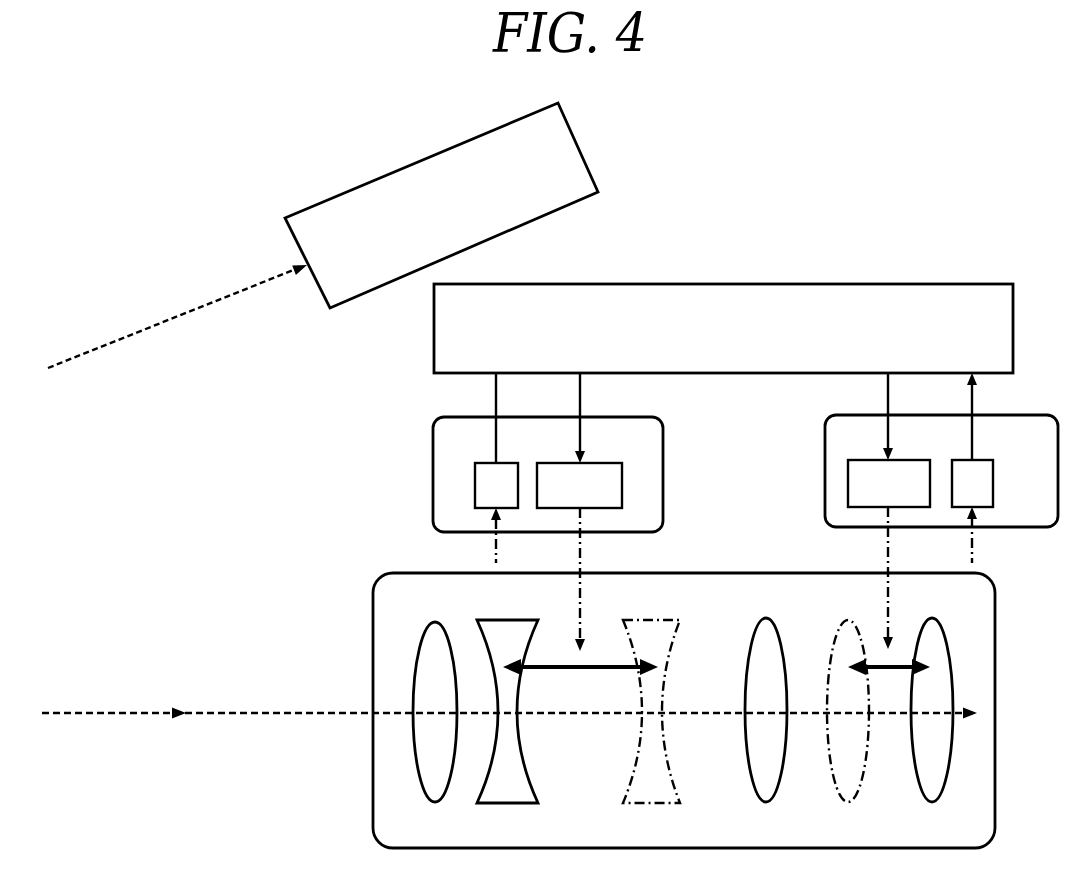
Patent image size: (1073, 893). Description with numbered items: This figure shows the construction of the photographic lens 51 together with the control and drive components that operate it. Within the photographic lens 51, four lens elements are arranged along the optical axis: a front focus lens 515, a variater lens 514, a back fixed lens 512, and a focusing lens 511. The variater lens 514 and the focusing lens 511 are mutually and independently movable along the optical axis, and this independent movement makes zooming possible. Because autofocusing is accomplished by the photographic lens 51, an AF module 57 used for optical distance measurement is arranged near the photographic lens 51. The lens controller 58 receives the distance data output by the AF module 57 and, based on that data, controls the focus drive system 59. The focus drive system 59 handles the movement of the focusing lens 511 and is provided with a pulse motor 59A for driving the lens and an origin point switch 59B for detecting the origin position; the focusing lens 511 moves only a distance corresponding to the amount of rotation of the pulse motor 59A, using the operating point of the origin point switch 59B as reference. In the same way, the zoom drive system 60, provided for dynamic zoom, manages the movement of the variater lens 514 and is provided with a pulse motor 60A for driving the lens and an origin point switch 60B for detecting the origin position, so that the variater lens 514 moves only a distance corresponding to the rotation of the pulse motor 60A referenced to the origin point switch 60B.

The photographic lens 51 is at (684, 729).
The focusing lens 511 is at (937, 802).
The back fixed lens 512 is at (770, 802).
The variater lens 514 is at (518, 805).
The front focus lens 515 is at (440, 805).
The AF module 57 is at (590, 168).
The lens controller 58 is at (802, 282).
The focus drive system 59 is at (941, 452).
The pulse motor 59A is at (913, 458).
The origin point switch 59B is at (992, 458).
The zoom drive system 60 is at (548, 457).
The pulse motor 60A is at (605, 462).
The origin point switch 60B is at (515, 462).